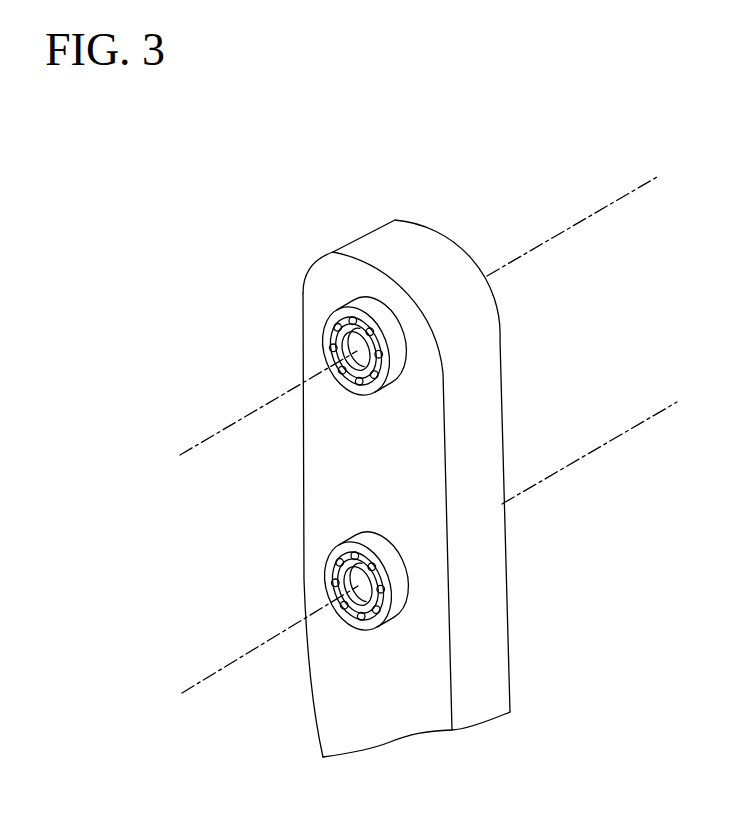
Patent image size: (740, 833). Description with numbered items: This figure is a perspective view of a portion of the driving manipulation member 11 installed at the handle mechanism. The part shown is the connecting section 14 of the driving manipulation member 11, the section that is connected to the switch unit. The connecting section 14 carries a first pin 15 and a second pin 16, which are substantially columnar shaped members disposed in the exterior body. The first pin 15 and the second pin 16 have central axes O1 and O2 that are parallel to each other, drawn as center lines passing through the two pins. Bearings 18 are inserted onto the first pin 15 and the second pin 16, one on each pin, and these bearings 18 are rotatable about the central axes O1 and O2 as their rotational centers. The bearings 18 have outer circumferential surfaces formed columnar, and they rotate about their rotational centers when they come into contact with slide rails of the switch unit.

The driving manipulation member 11 is at (475, 374).
The connecting section 14 is at (212, 473).
The first pin 15 is at (357, 352).
The second pin 16 is at (355, 585).
The bearing 18 is at (325, 343).
The central axis O1 is at (593, 213).
The central axis O2 is at (622, 435).